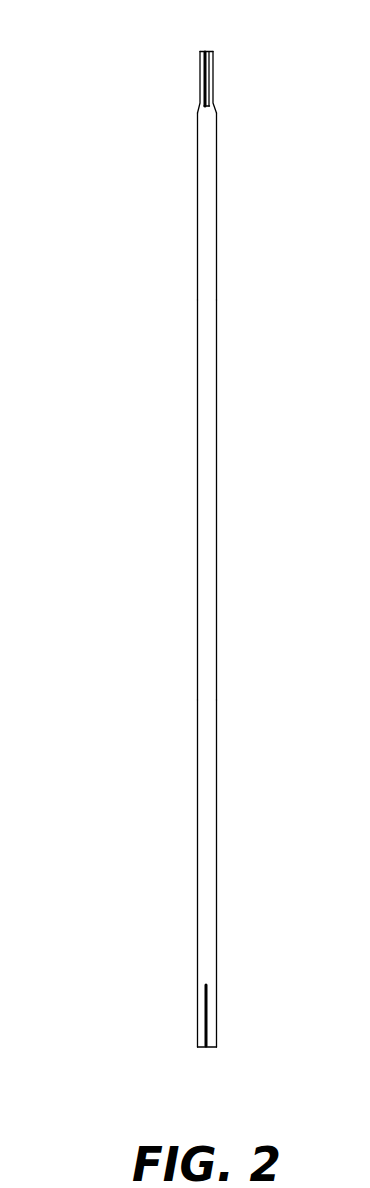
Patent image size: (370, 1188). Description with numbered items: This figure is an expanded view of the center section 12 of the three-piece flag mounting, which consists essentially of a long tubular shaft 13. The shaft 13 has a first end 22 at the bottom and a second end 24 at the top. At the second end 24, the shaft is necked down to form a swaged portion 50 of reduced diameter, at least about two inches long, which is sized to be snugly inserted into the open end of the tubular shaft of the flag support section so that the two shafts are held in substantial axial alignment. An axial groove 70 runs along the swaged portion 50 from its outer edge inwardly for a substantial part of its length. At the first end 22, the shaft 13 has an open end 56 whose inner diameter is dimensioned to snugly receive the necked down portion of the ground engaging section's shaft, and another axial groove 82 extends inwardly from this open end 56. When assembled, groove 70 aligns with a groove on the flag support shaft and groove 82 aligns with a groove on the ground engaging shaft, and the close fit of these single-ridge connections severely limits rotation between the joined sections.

The center section 12 is at (103, 66).
The shaft 13 is at (202, 505).
The first end 22 is at (202, 918).
The second end 24 is at (206, 130).
The necked down or swaged portion 50 is at (200, 90).
The open end 56 is at (205, 1048).
The axial groove 70 is at (209, 70).
The axial groove 82 is at (204, 1017).